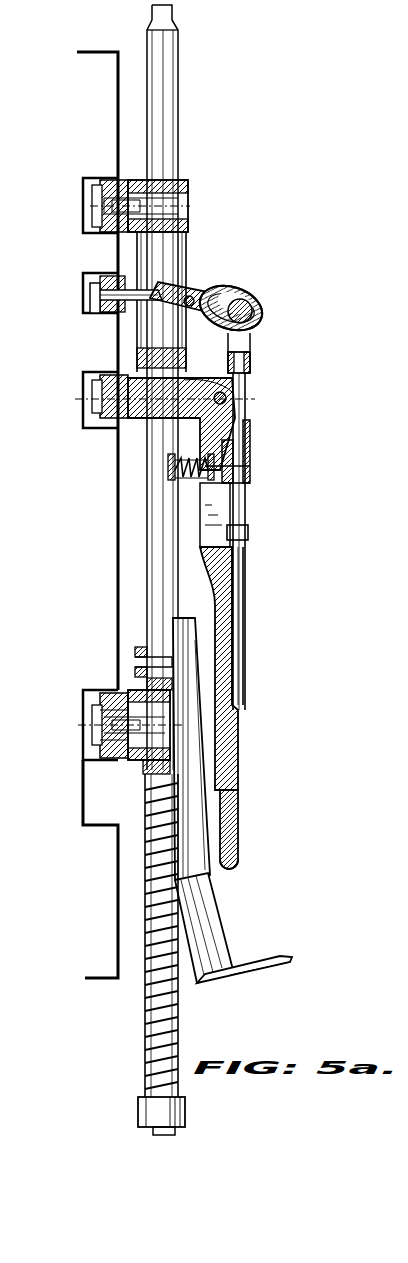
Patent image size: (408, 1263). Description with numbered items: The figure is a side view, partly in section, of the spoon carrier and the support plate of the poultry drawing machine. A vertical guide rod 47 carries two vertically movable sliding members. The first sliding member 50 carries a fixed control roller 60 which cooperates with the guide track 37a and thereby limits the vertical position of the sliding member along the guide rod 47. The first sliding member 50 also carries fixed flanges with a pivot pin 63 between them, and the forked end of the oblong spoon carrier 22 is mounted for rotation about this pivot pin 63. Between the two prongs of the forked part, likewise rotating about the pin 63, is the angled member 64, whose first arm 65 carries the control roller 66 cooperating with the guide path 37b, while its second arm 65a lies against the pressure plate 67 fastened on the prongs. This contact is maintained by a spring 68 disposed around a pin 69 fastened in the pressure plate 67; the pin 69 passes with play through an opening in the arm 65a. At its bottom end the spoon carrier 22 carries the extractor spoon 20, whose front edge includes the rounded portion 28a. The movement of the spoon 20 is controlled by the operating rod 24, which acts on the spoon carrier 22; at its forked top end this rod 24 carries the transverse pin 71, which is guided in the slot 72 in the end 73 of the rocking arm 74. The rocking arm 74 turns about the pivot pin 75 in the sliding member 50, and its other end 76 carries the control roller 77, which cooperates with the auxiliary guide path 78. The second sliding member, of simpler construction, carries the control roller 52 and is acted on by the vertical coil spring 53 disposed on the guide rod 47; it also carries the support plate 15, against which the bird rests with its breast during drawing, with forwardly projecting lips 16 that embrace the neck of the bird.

The guide rod 47 is at (165, 98).
The guide track 37a is at (92, 178).
The fixed control roller 60 is at (95, 188).
The first sliding member 50 is at (112, 248).
The auxiliary guide path 78 is at (98, 282).
The other end of rocking arm 76 is at (130, 285).
The control roller 77 is at (95, 314).
The rocking arm 74 is at (192, 283).
The pivot pin 75 is at (195, 296).
The slot 72 is at (237, 292).
The end of rocking arm 73 is at (250, 300).
The transverse pin 71 is at (262, 314).
The pivot pin 63 is at (240, 400).
The guide path 37b is at (92, 398).
The control roller 66 is at (98, 420).
The first arm 65 is at (138, 380).
The second arm 65a is at (245, 440).
The angled member 64 is at (180, 420).
The pressure plate 67 is at (255, 467).
The pin 69 is at (175, 478).
The spring 68 is at (178, 485).
The operating rod 24 is at (238, 738).
The extractor spoon 20 is at (238, 825).
The rounded portion 28a is at (238, 865).
The spoon carrier 22 is at (175, 590).
The support plate 15 is at (220, 922).
The lips 16 is at (250, 968).
The control roller 52 is at (112, 758).
The coil spring 53 is at (142, 1045).